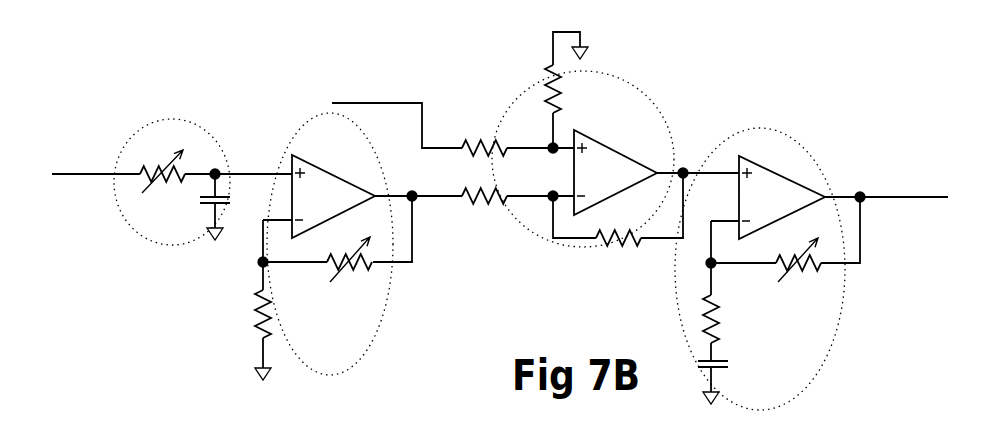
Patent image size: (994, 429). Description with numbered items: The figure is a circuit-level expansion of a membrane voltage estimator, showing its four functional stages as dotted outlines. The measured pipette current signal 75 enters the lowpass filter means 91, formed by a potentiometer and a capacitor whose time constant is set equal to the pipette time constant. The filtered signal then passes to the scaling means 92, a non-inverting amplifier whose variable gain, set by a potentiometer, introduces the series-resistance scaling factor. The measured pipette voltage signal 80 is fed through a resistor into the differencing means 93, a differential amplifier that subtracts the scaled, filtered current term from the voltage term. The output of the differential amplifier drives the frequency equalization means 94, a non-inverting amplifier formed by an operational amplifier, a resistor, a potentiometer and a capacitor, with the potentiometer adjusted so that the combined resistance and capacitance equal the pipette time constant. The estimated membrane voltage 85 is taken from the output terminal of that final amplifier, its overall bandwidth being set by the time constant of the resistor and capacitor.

The Ipmeas 75 is at (72, 176).
The Vpmeas 80 is at (415, 102).
The Vmest 85 is at (893, 200).
The lowpass filter means 91 is at (149, 250).
The scaling means 92 is at (382, 344).
The differencing means 93 is at (643, 79).
The frequency equalization means 94 is at (771, 120).